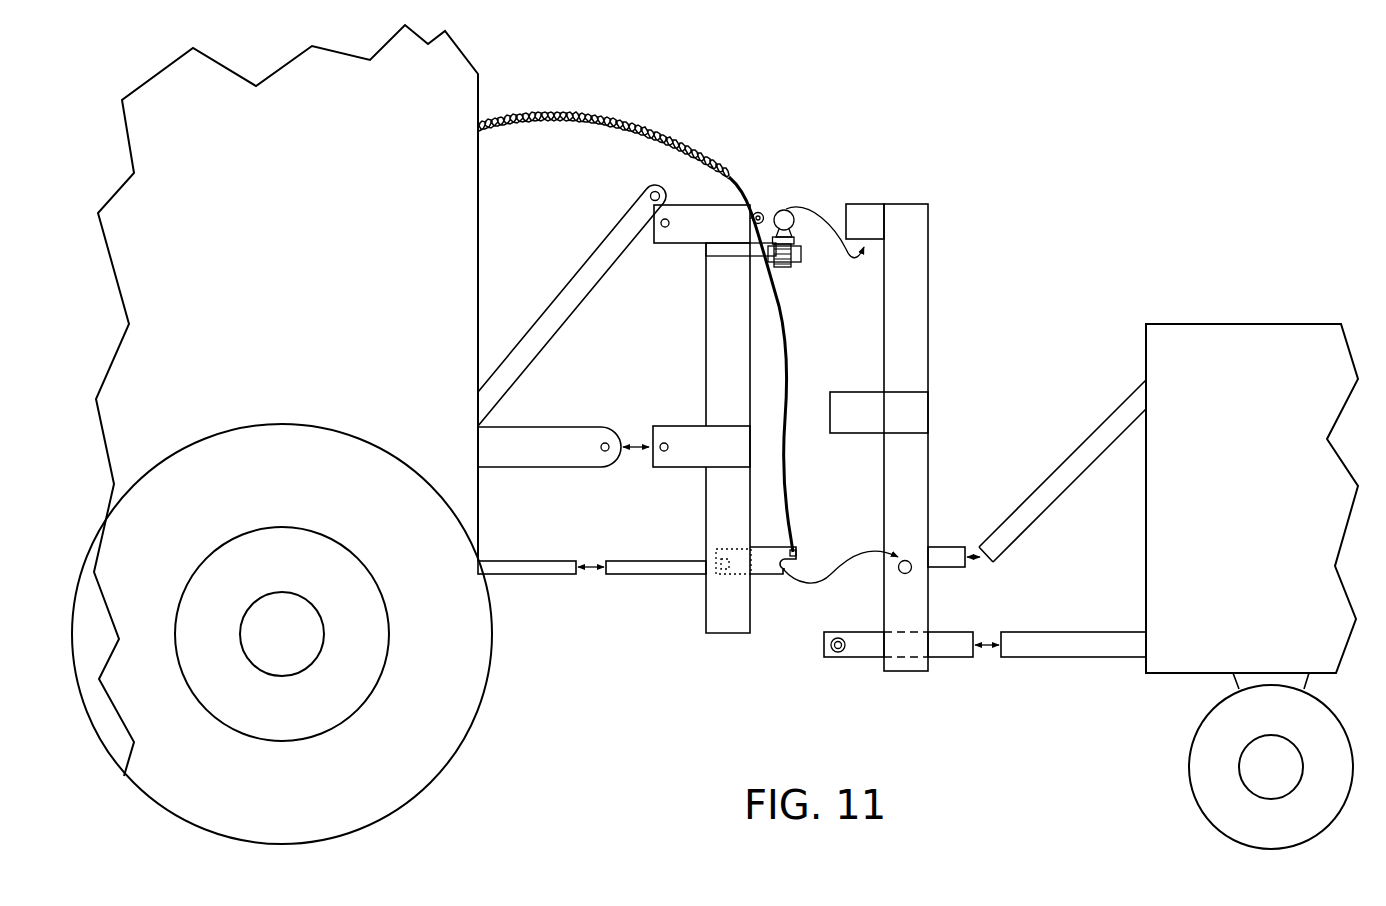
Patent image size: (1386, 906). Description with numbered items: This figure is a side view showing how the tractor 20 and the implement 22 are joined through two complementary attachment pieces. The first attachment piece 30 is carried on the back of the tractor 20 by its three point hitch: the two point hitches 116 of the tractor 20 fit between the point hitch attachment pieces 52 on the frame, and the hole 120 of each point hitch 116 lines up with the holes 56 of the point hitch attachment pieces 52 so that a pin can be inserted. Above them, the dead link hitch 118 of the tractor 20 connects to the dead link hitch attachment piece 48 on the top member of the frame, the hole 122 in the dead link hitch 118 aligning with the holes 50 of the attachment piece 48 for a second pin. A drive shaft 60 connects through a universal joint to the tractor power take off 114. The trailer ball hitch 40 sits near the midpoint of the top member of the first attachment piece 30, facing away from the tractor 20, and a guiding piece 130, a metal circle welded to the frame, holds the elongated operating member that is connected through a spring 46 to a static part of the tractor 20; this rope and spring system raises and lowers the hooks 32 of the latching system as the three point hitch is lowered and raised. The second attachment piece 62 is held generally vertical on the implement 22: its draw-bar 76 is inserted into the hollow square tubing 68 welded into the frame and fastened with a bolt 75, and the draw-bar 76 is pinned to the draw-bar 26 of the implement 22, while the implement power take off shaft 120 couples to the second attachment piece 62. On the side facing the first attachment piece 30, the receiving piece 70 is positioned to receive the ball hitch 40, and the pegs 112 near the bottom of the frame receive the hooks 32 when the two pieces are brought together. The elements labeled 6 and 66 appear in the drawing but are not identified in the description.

The lower bracket 6 is at (933, 571).
The tractor 20 is at (494, 610).
The implement 22 is at (1142, 354).
The implement draw-bar 26 is at (1043, 661).
The first attachment piece 30 is at (702, 538).
The hooks 32 is at (800, 557).
The trailer ball hitch 40 is at (783, 205).
The spring 46 is at (689, 152).
The dead link hitch attachment piece 48 is at (690, 245).
The hole 50 is at (671, 192).
The point hitch attachment pieces 52 is at (687, 462).
The holes 56 is at (664, 443).
The drive shaft 60 is at (663, 578).
The second attachment piece 62 is at (931, 393).
The cross bracket 66 is at (877, 391).
The hollow square tubing 68 is at (843, 661).
The receiving piece 70 is at (863, 203).
The bolt 75 is at (836, 638).
The draw-bar 76 is at (960, 661).
The pegs 112 is at (898, 573).
The tractor power take off 114 is at (547, 578).
The point hitches 116 is at (609, 471).
The dead link hitch 118 is at (626, 207).
The point hitch hole 120 is at (604, 443).
The hole 122 is at (660, 195).
The guiding piece 130 is at (763, 204).